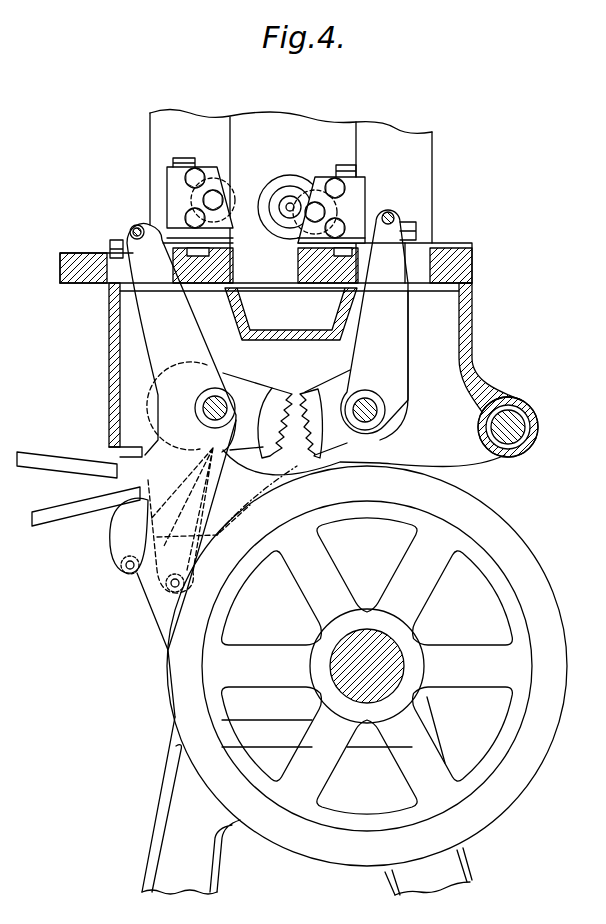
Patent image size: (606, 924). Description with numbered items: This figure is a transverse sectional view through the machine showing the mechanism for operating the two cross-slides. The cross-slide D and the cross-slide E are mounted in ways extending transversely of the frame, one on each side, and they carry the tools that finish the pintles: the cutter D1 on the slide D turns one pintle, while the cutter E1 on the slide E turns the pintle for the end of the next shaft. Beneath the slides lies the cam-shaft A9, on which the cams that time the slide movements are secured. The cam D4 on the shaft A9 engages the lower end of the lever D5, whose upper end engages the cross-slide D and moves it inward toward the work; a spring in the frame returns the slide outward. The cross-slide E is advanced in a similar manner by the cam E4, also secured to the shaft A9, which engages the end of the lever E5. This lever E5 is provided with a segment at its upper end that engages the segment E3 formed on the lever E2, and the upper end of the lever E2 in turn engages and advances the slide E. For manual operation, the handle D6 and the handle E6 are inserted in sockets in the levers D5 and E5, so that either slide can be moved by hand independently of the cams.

The cross-slide D is at (72, 253).
The cutter D1 is at (232, 207).
The cutter E1 is at (300, 182).
The cross-slide E is at (472, 263).
The lever D5 is at (181, 339).
The lever E2 is at (363, 358).
The segment E3 is at (316, 392).
The handle E6 is at (42, 453).
The handle D6 is at (42, 509).
The lever E5 is at (123, 535).
The cam D4 is at (208, 553).
The cam E4 is at (147, 608).
The cam-shaft A9 is at (378, 640).